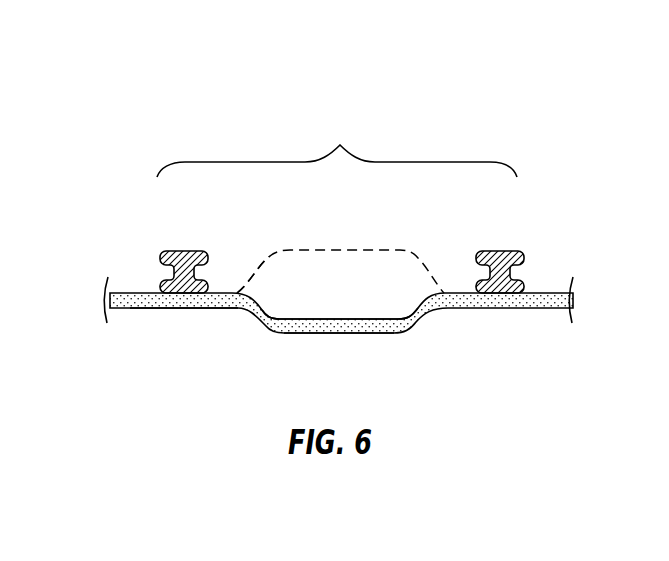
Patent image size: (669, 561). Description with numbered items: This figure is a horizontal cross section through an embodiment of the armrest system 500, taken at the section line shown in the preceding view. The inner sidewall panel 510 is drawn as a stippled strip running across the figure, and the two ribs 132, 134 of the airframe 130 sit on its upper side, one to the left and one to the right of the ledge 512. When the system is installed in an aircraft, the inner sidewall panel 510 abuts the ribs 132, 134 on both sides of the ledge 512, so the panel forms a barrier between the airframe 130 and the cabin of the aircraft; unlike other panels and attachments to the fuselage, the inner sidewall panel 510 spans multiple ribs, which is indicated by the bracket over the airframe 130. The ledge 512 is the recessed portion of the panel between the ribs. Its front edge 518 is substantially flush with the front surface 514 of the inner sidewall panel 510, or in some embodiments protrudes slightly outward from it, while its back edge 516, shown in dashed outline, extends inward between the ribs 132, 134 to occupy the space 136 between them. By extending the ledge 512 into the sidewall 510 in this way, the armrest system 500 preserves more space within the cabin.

The armrest system 500 is at (172, 105).
The airframe 130 is at (337, 144).
The rib 132 is at (171, 251).
The rib 134 is at (506, 250).
The space 136 is at (232, 268).
The inner sidewall panel 510 is at (572, 300).
The ledge 512 is at (310, 285).
The front surface 514 is at (193, 310).
The back edge 516 is at (374, 250).
The front edge 518 is at (358, 334).